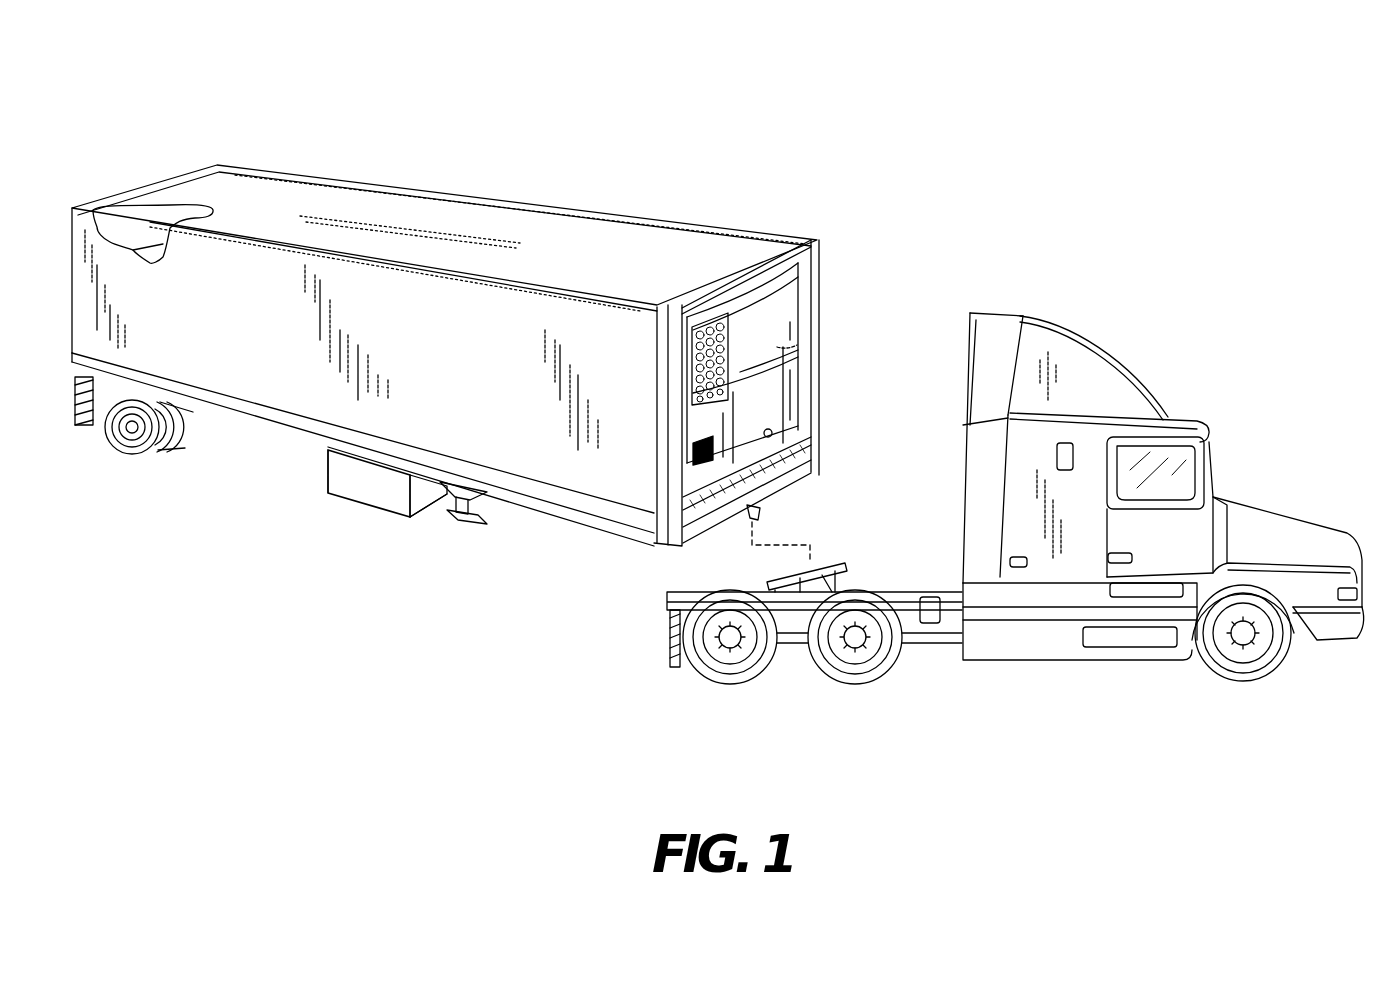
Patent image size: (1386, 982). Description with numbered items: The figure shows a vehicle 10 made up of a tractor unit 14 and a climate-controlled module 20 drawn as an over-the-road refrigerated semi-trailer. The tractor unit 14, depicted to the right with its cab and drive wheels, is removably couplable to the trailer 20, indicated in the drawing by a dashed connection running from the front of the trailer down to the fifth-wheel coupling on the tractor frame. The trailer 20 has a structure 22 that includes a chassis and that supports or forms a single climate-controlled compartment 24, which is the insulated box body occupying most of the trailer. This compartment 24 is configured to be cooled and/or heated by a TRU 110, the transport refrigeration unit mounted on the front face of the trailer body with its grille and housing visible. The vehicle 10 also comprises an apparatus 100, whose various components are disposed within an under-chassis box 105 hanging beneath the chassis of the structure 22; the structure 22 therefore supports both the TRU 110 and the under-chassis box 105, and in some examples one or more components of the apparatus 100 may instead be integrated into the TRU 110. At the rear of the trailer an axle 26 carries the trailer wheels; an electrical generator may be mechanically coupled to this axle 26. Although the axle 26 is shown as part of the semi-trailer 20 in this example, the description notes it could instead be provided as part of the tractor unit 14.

The vehicle 10 is at (1180, 108).
The tractor unit 14 is at (1105, 382).
The climate-controlled module 20 is at (517, 227).
The structure 22 is at (323, 442).
The climate-controlled compartment 24 is at (117, 227).
The axle 26 is at (120, 437).
The apparatus 100 is at (522, 614).
The under-chassis box 105 is at (360, 487).
The TRU 110 is at (802, 348).